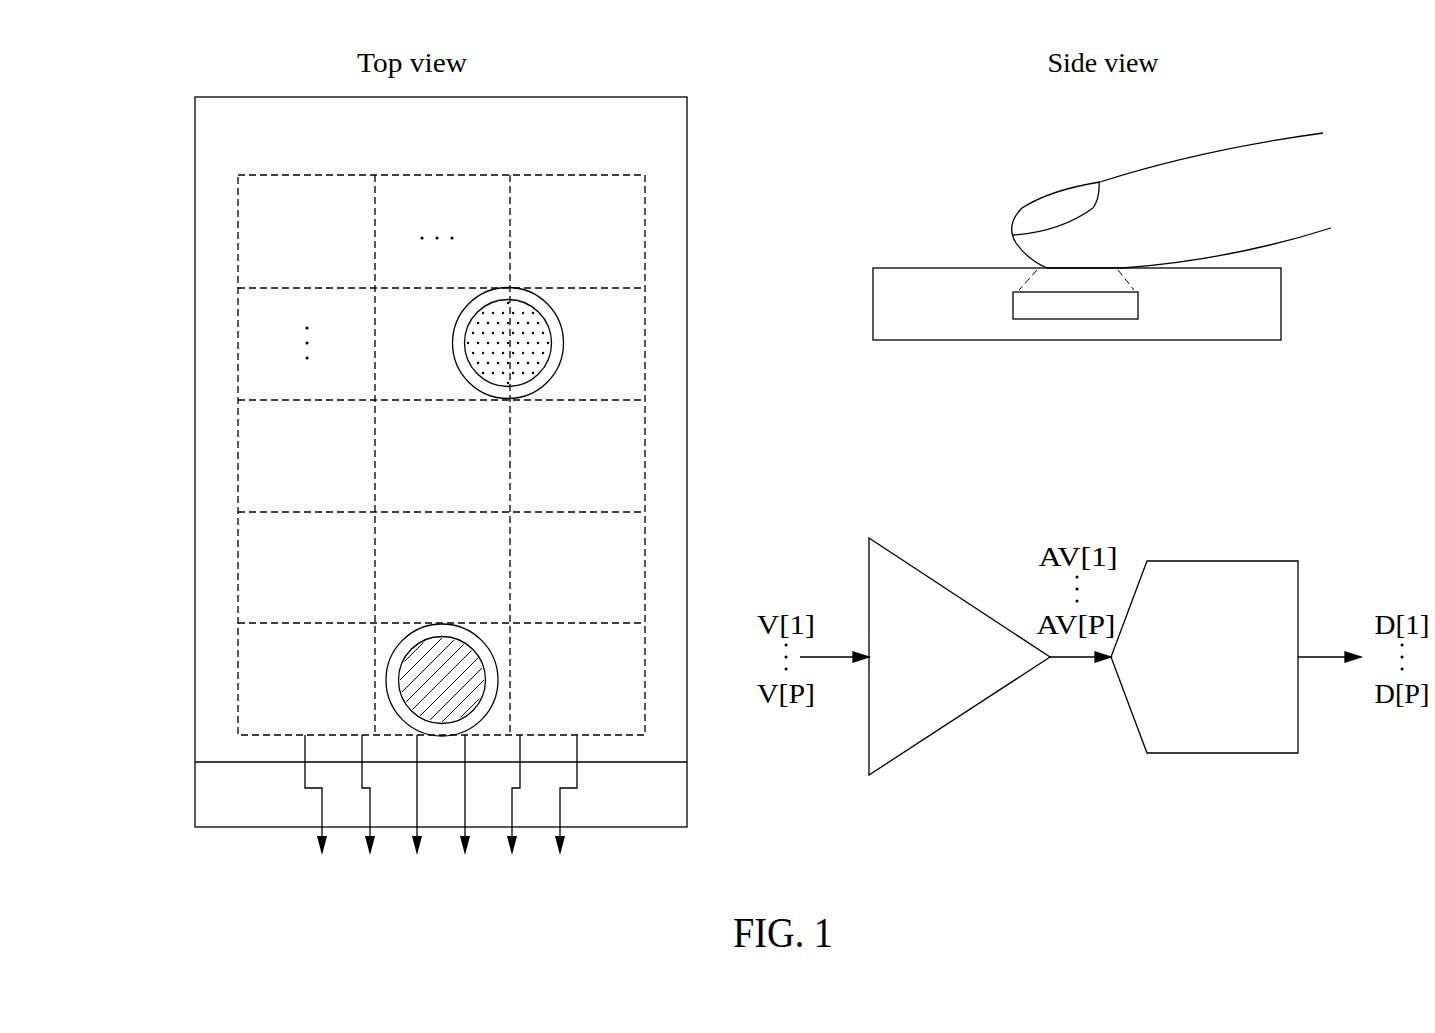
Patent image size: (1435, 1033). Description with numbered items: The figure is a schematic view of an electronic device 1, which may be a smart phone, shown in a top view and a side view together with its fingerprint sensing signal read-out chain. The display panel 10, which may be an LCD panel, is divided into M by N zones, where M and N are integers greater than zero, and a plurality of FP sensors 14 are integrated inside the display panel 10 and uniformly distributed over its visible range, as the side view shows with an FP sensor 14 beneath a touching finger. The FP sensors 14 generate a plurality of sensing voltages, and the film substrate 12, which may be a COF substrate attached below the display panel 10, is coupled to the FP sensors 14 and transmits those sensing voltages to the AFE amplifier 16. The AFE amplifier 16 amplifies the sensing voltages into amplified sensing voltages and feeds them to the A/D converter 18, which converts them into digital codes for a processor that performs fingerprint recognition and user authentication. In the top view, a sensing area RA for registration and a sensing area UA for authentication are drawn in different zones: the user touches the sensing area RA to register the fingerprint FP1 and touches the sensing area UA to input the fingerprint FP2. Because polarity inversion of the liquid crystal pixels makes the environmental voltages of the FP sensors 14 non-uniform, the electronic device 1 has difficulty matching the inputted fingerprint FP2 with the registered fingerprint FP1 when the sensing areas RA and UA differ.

The electronic device 1 is at (165, 58).
The display panel 10 is at (630, 107).
The film substrate 12 is at (212, 781).
The FP sensor 14 is at (1073, 319).
The AFE amplifier 16 is at (915, 566).
The A/D converter 18 is at (1195, 561).
The registered fingerprint FP1 is at (450, 652).
The inputted fingerprint FP2 is at (538, 347).
The sensing area for registration RA is at (397, 645).
The sensing area for authentication UA is at (541, 388).